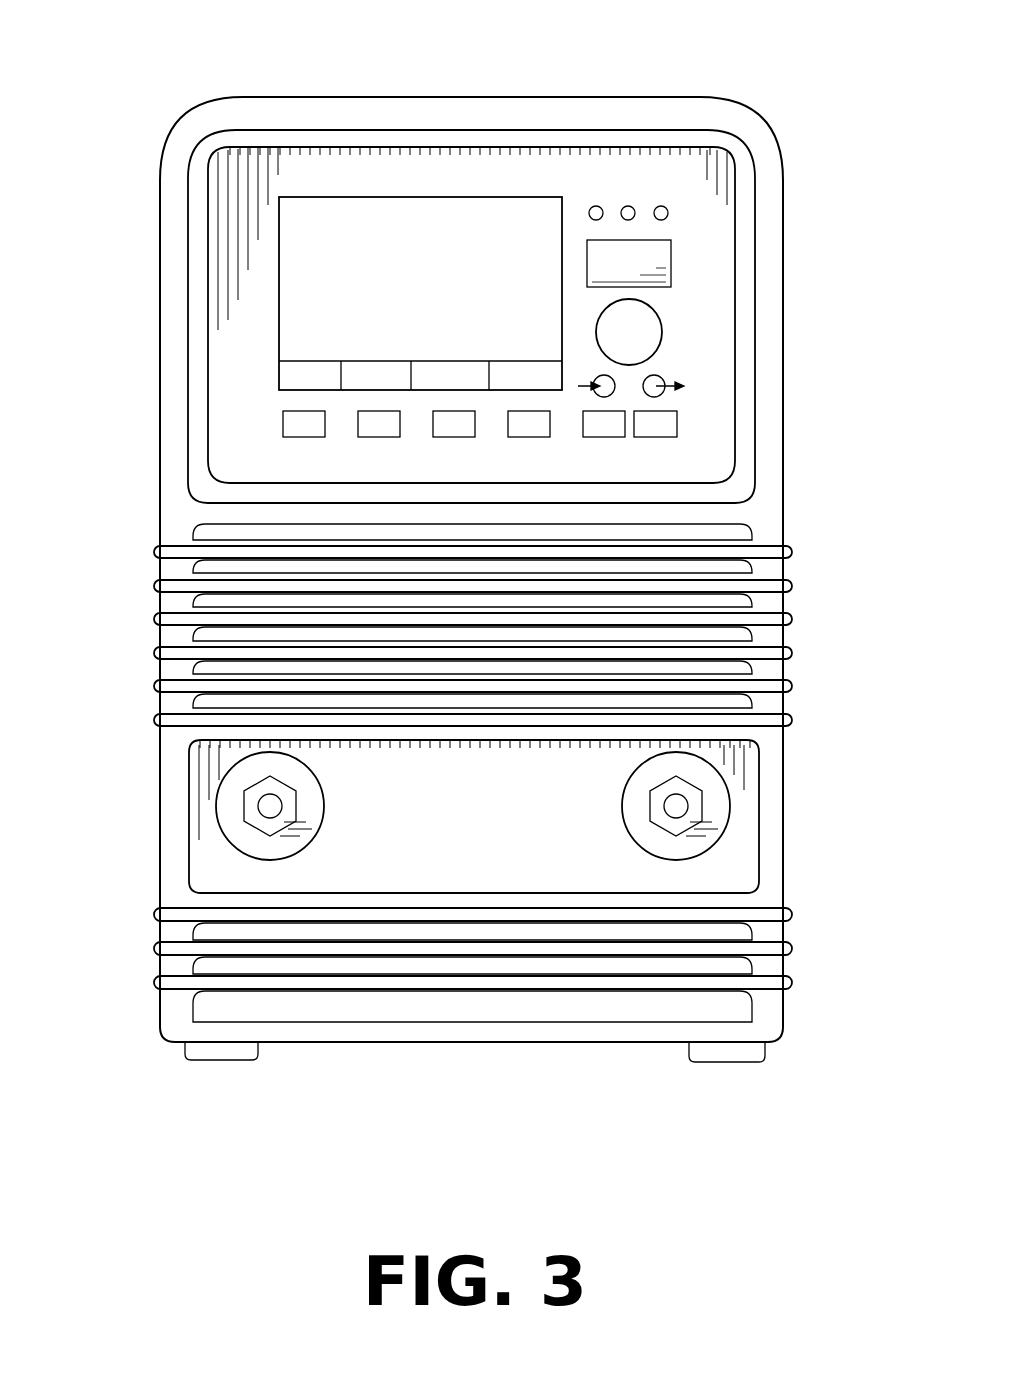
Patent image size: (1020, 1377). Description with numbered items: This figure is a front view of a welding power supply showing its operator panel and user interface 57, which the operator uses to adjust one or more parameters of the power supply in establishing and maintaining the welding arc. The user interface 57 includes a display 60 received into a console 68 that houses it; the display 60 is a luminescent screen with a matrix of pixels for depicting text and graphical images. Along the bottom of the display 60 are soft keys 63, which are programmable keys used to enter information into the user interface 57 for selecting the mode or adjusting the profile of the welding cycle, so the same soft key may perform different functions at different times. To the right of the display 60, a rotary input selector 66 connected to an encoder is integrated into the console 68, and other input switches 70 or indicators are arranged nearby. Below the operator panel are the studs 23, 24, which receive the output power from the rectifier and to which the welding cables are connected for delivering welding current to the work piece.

The stud 23 is at (252, 810).
The stud 24 is at (696, 810).
The user interface 57 is at (620, 168).
The display 60 is at (413, 240).
The soft keys 63 is at (381, 420).
The input selector 66 is at (646, 328).
The console 68 is at (283, 172).
The input switches 70 is at (704, 204).